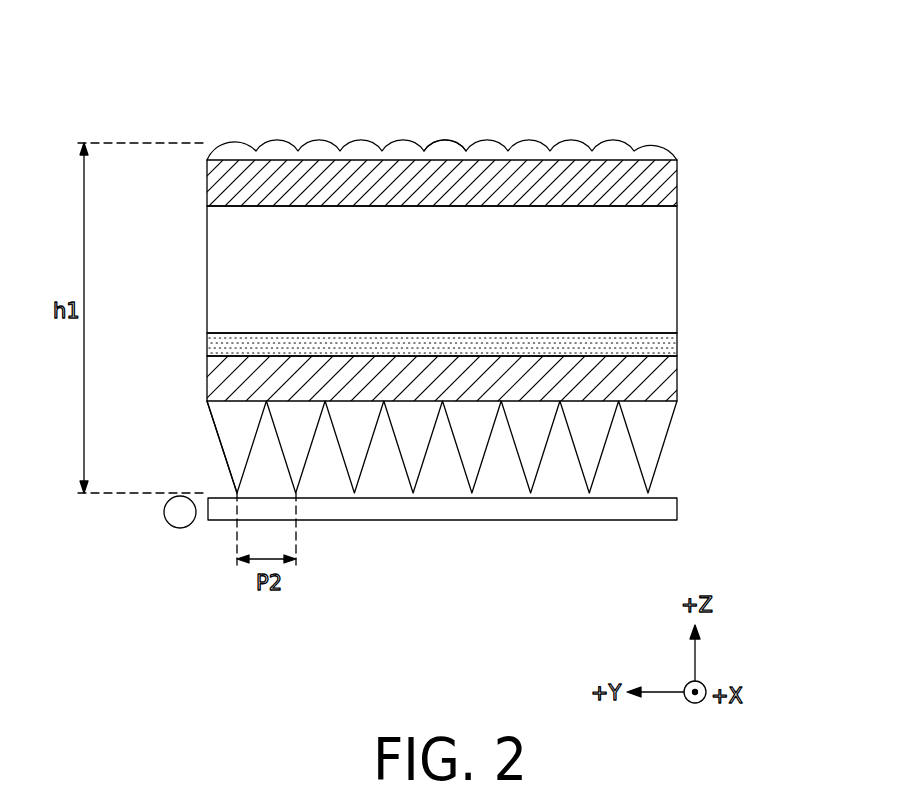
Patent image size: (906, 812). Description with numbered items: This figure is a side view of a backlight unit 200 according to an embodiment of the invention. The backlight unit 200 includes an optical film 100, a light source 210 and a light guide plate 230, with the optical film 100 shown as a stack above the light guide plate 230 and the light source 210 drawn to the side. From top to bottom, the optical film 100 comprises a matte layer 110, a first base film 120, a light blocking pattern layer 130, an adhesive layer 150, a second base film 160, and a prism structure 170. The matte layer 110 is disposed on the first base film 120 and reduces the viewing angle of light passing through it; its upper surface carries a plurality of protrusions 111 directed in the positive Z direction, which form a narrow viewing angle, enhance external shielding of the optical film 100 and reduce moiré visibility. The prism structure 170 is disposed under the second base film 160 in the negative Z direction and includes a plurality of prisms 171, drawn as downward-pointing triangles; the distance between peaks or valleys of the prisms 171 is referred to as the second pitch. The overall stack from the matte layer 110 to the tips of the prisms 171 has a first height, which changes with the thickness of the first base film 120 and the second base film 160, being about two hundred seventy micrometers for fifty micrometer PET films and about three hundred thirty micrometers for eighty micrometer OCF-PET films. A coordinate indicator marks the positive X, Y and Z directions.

The backlight unit 200 is at (195, 66).
The optical film 100 is at (190, 246).
The matte layer 110 is at (670, 143).
The protrusions 111 is at (485, 143).
The first base film 120 is at (665, 183).
The light blocking pattern layer 130 is at (665, 267).
The adhesive layer 150 is at (666, 344).
The second base film 160 is at (665, 379).
The prism structure 170 is at (656, 437).
The prisms 171 is at (236, 414).
The light source 210 is at (180, 513).
The light guide plate 230 is at (672, 510).